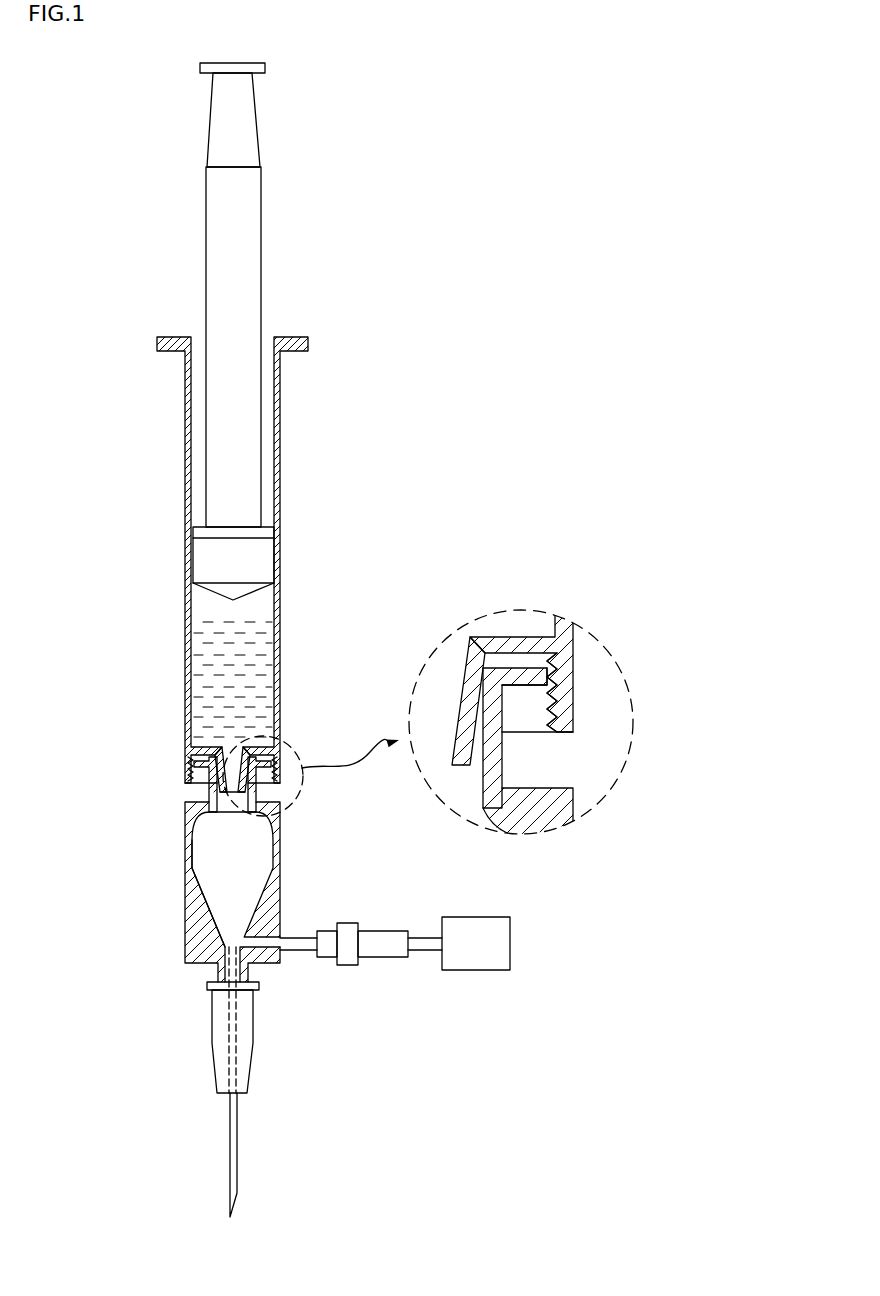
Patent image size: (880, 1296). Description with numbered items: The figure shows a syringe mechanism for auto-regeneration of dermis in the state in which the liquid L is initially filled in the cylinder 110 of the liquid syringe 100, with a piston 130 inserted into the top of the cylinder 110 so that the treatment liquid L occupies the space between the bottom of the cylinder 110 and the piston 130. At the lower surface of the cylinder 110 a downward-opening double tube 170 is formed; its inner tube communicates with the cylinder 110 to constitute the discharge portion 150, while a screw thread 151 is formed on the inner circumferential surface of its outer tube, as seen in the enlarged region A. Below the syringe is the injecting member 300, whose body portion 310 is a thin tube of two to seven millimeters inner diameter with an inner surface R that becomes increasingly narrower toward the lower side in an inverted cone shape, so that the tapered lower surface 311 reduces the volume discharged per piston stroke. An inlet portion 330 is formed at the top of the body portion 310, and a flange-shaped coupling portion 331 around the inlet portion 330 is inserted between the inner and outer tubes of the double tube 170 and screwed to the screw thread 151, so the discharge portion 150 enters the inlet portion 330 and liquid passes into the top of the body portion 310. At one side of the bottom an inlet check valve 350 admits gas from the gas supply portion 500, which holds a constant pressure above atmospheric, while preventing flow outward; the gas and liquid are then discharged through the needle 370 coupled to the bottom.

The liquid syringe 100 is at (158, 421).
The cylinder 110 is at (280, 462).
The piston 130 is at (245, 281).
The discharge portion 150 is at (213, 772).
The screw threads 151 is at (552, 702).
The double tube 170 is at (567, 658).
The injecting member 300 is at (160, 863).
The body portion 310 is at (282, 850).
The inclined outlet surface 311 is at (216, 903).
The inlet portion 330 is at (495, 760).
The coupling portion 331 is at (545, 677).
The inlet check valve 350 is at (380, 953).
The needle 370 is at (233, 1148).
The gas supply portion 500 is at (485, 958).
The liquid L is at (188, 681).
The reservoir space R is at (207, 838).
The enlarged region A is at (297, 791).